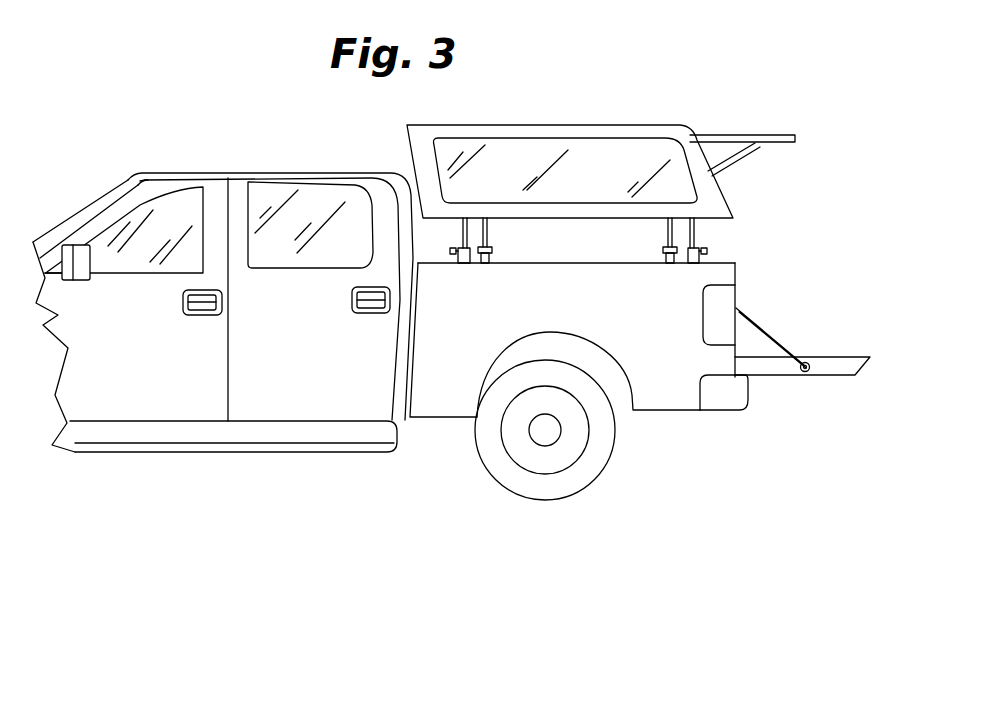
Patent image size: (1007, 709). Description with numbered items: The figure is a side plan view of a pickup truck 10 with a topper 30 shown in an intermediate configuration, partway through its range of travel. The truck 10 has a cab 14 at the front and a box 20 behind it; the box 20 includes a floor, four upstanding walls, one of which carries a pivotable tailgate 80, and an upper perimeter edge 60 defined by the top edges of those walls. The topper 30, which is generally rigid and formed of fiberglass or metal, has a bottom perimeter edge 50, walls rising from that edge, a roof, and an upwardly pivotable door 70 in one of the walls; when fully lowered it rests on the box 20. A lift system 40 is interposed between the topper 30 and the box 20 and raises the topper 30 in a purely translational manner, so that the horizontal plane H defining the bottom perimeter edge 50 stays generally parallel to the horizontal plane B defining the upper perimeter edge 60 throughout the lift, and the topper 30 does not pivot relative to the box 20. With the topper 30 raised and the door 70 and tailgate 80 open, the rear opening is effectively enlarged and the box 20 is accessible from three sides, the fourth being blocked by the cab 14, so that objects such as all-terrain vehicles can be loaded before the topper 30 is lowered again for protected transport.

The pickup truck 10 is at (146, 162).
The cab 14 is at (240, 173).
The box 20 is at (658, 388).
The topper 30 is at (687, 125).
The system 40 is at (735, 234).
The bottom perimeter edge 50 is at (728, 219).
The upper perimeter edge 60 is at (727, 263).
The upwardly pivotable door 70 is at (795, 135).
The tailgate 80 is at (870, 357).
The horizontal plane B is at (525, 263).
The horizontal plane H is at (568, 218).